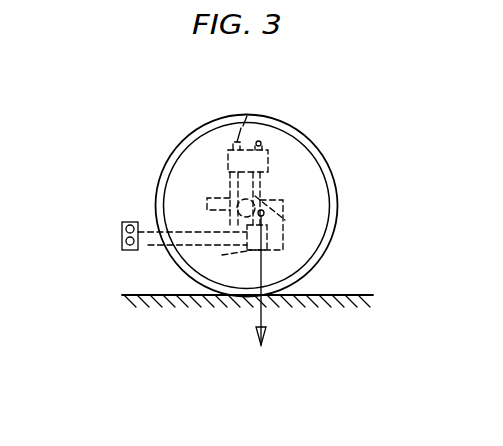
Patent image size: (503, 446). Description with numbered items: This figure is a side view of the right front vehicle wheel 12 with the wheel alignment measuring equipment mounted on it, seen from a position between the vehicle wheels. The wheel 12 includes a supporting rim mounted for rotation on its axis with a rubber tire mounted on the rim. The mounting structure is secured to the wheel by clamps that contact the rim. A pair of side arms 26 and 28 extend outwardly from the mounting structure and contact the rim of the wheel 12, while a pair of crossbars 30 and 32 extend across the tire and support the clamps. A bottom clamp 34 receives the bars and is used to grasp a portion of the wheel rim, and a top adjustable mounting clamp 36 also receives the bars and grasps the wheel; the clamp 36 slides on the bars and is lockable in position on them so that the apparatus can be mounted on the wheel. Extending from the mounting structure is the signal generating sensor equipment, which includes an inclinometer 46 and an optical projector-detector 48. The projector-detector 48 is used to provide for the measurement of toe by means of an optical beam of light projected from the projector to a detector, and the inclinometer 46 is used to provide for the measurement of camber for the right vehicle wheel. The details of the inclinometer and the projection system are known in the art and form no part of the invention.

The right front wheel 12 is at (309, 268).
The side arm 26 is at (284, 200).
The side arm 28 is at (207, 198).
The crossbar 30 is at (252, 112).
The crossbar 32 is at (290, 130).
The bottom clamp 34 is at (222, 255).
The top adjustable mounting clamp 36 is at (268, 165).
The inclinometer 46 is at (287, 232).
The optical projector-detector 48 is at (148, 245).